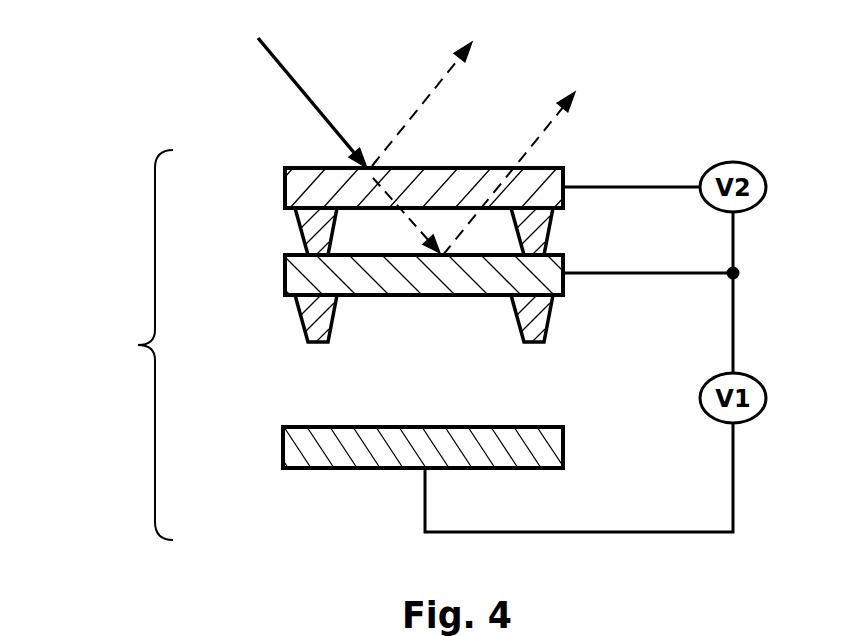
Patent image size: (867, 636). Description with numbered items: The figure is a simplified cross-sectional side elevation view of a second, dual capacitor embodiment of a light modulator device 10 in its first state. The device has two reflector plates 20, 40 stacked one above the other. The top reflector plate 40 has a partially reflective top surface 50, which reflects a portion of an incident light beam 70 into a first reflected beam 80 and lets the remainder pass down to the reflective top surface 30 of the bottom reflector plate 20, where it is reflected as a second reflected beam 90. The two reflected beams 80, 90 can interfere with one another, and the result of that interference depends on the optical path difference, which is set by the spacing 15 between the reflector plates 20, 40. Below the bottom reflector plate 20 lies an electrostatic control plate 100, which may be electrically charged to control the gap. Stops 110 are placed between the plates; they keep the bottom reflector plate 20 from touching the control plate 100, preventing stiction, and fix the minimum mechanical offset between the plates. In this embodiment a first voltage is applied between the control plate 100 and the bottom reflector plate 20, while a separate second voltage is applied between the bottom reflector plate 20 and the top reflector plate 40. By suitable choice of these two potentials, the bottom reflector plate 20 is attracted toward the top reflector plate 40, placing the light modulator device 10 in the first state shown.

The light modulator device 10 is at (138, 345).
The spacing 15 is at (387, 244).
The reflector plate 20 is at (285, 276).
The reflective top surface 30 is at (552, 254).
The reflector plate 40 is at (285, 180).
The partially reflective top surface 50 is at (308, 167).
The incident light beam 70 is at (278, 72).
The first reflected beam 80 is at (433, 92).
The second reflected beam 90 is at (543, 135).
The electrostatic control plate 100 is at (523, 425).
The stops 110 is at (300, 220).